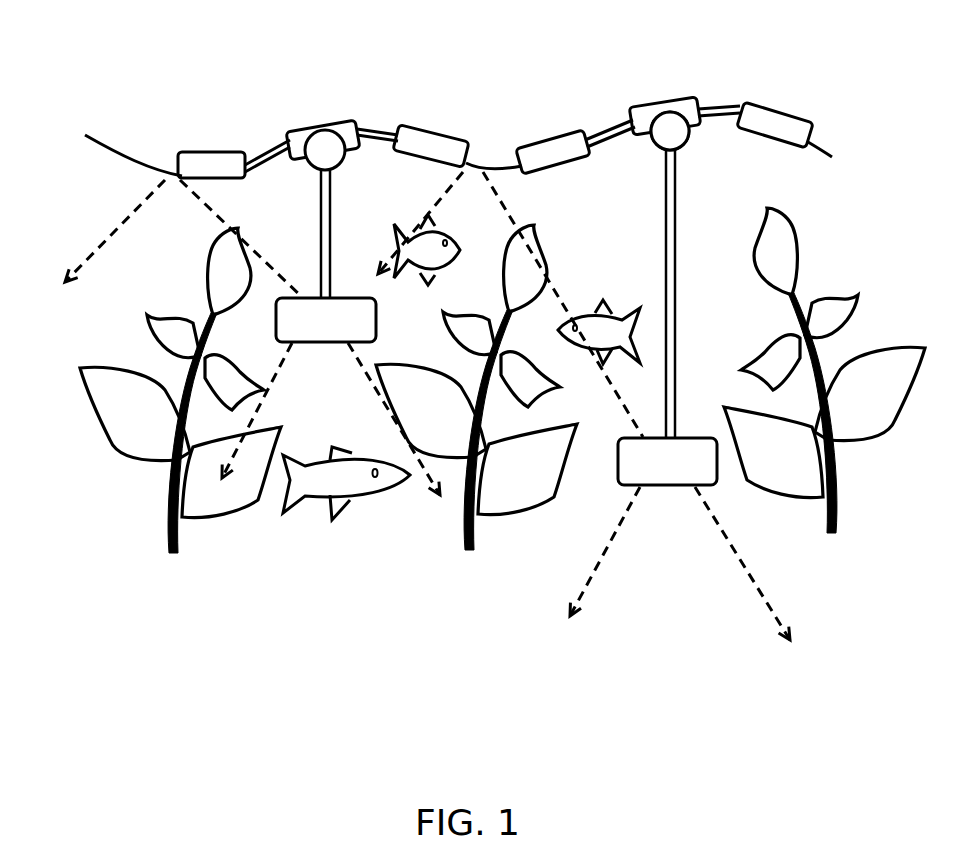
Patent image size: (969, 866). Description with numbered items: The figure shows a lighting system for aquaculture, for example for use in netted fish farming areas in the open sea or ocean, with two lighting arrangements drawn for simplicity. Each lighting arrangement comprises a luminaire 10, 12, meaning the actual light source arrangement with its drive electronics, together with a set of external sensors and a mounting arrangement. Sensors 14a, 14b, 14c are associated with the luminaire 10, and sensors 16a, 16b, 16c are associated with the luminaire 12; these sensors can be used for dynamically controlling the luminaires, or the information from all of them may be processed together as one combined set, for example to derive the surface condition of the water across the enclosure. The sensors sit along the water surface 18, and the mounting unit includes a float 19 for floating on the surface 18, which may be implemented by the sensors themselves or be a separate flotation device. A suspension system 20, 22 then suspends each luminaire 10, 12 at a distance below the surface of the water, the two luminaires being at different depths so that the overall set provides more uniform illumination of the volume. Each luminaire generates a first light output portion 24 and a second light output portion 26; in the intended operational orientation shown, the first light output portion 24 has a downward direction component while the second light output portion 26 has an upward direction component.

The luminaire 10 is at (344, 297).
The luminaire 12 is at (665, 487).
The sensor 14a is at (196, 153).
The sensor 14b is at (320, 128).
The sensor 14c is at (398, 127).
The sensor 16a is at (576, 134).
The sensor 16b is at (652, 108).
The sensor 16c is at (746, 103).
The water surface 18 is at (830, 157).
The float 19 is at (690, 134).
The suspension system 20 is at (320, 238).
The suspension system 22 is at (664, 232).
The first light output portion 24 is at (585, 590).
The second light output portion 26 is at (98, 242).